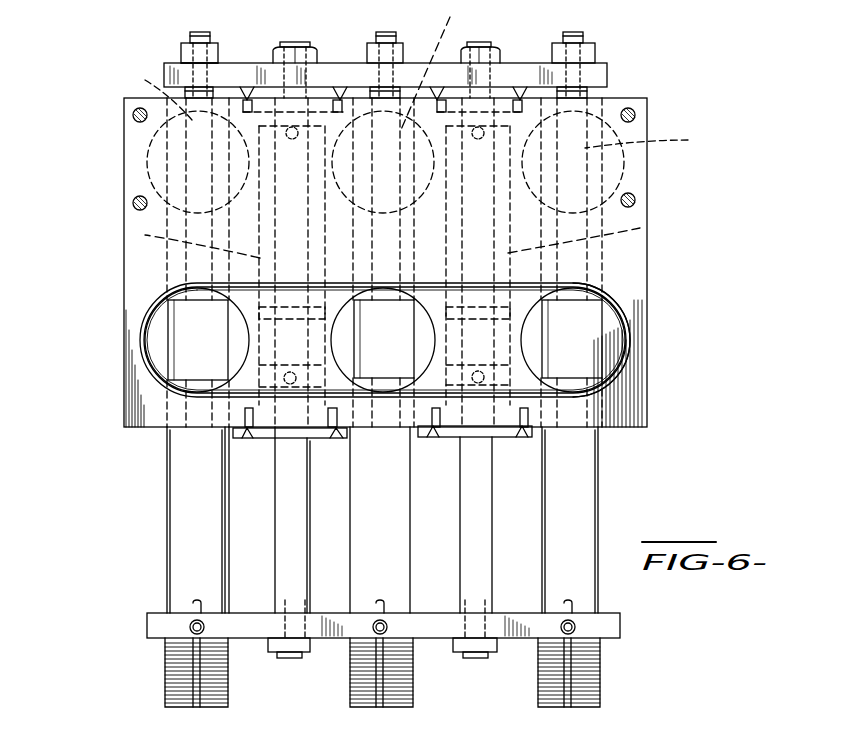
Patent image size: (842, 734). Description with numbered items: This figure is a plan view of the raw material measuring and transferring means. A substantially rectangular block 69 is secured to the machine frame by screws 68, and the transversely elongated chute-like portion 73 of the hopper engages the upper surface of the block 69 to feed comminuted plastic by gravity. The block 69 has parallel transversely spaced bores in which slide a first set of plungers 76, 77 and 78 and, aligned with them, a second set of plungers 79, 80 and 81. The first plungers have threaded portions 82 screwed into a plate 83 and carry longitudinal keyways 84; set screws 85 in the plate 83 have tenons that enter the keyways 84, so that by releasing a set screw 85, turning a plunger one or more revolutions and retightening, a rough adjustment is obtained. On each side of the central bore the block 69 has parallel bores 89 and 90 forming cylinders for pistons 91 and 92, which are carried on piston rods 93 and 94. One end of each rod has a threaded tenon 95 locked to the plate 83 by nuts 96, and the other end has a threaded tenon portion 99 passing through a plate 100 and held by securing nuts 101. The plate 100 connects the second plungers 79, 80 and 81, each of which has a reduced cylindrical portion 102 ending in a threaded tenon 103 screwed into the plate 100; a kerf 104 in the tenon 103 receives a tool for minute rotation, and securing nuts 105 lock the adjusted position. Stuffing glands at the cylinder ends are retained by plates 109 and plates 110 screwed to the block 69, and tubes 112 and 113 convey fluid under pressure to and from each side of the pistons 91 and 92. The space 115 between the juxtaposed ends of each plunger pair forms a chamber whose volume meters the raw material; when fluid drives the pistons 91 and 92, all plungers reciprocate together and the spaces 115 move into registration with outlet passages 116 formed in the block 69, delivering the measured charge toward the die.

The screws 68 is at (133, 115).
The block 69 is at (647, 160).
The chute-like portion 73 is at (622, 367).
The plunger 76 is at (175, 462).
The plunger 77 is at (356, 505).
The plunger 78 is at (595, 490).
The plunger 79 is at (190, 291).
The plunger 80 is at (364, 297).
The plunger 81 is at (600, 288).
The threaded portions 82 is at (165, 690).
The plate 83 is at (152, 613).
The keyways 84 is at (210, 675).
The set screws 85 is at (190, 627).
The bore 89 is at (145, 233).
The bore 90 is at (640, 228).
The piston 91 is at (272, 358).
The piston 92 is at (508, 362).
The piston rod 93 is at (282, 518).
The piston rod 94 is at (468, 490).
The threaded tenons 95 is at (282, 628).
The nuts 96 is at (285, 655).
The threaded tenon portions 99 is at (300, 44).
The plate 100 is at (607, 68).
The securing nuts 101 is at (283, 45).
The cylindrical portions 102 is at (414, 77).
The threaded tenon 103 is at (218, 57).
The kerf 104 is at (200, 32).
The securing nuts 105 is at (215, 50).
The plates 109 is at (317, 438).
The plates 110 is at (340, 87).
The tubes 112 is at (264, 430).
The tubes 113 is at (277, 155).
The space 115 is at (214, 334).
The outlet passages 116 is at (150, 153).